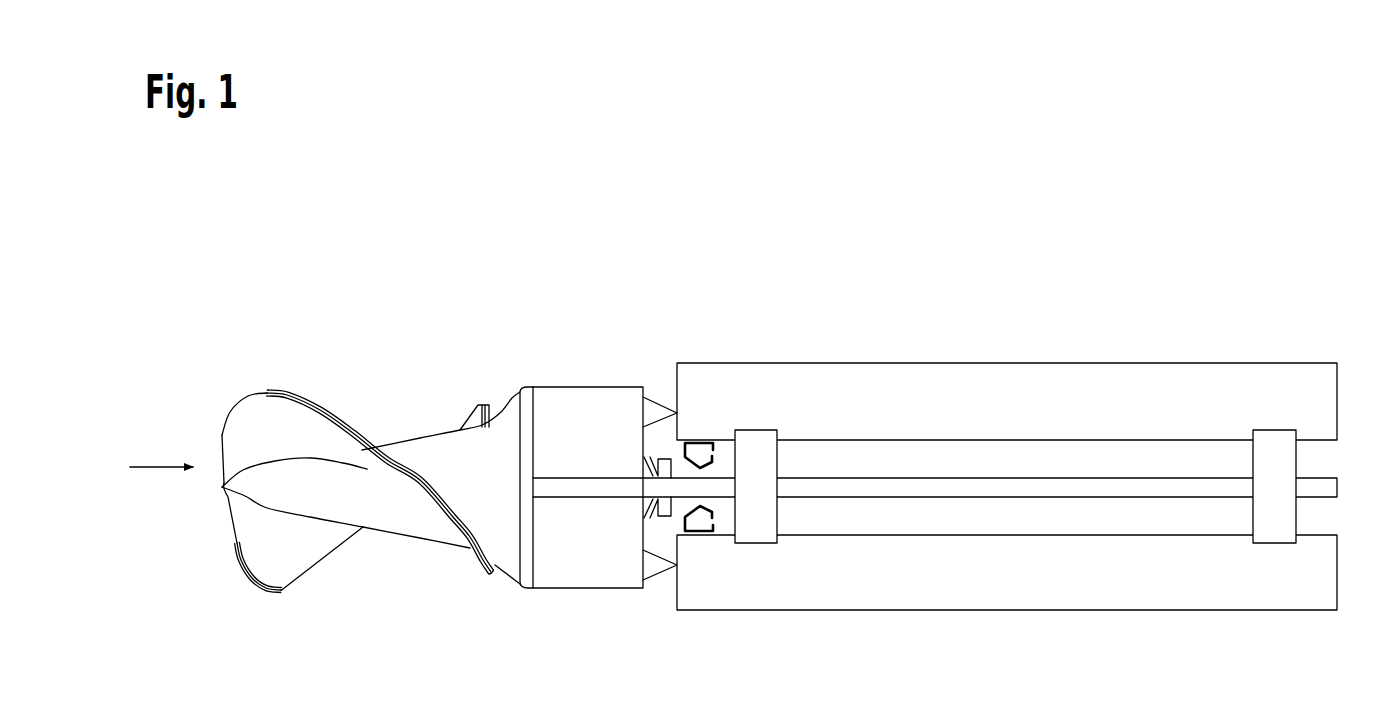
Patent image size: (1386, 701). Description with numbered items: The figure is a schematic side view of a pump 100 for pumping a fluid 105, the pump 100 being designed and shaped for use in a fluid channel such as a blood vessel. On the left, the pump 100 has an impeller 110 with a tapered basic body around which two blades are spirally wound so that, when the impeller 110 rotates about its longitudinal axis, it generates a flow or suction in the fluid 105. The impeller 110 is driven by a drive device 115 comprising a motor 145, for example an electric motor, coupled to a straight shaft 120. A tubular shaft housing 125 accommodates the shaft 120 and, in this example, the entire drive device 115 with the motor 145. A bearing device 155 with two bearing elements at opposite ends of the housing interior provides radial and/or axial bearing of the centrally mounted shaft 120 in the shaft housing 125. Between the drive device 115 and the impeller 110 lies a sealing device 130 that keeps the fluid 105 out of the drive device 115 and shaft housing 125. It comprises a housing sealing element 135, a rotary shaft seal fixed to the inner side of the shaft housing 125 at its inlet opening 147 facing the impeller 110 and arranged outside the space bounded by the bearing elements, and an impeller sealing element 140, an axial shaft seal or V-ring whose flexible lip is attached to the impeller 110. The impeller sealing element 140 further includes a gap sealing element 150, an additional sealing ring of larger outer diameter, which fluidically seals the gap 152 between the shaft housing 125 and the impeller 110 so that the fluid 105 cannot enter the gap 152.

The pump 100 is at (300, 305).
The fluid 105 is at (160, 466).
The impeller 110 is at (430, 450).
The drive device 115 is at (1099, 456).
The shaft 120 is at (1038, 487).
The shaft housing 125 is at (937, 380).
The sealing device 130 is at (645, 366).
The housing sealing element 135 is at (704, 537).
The impeller sealing element 140 is at (677, 433).
The motor 145 is at (1192, 455).
The inlet opening 147 is at (671, 526).
The gap sealing element 150 is at (655, 562).
The gap 152 is at (660, 334).
The bearing device 155 is at (757, 445).